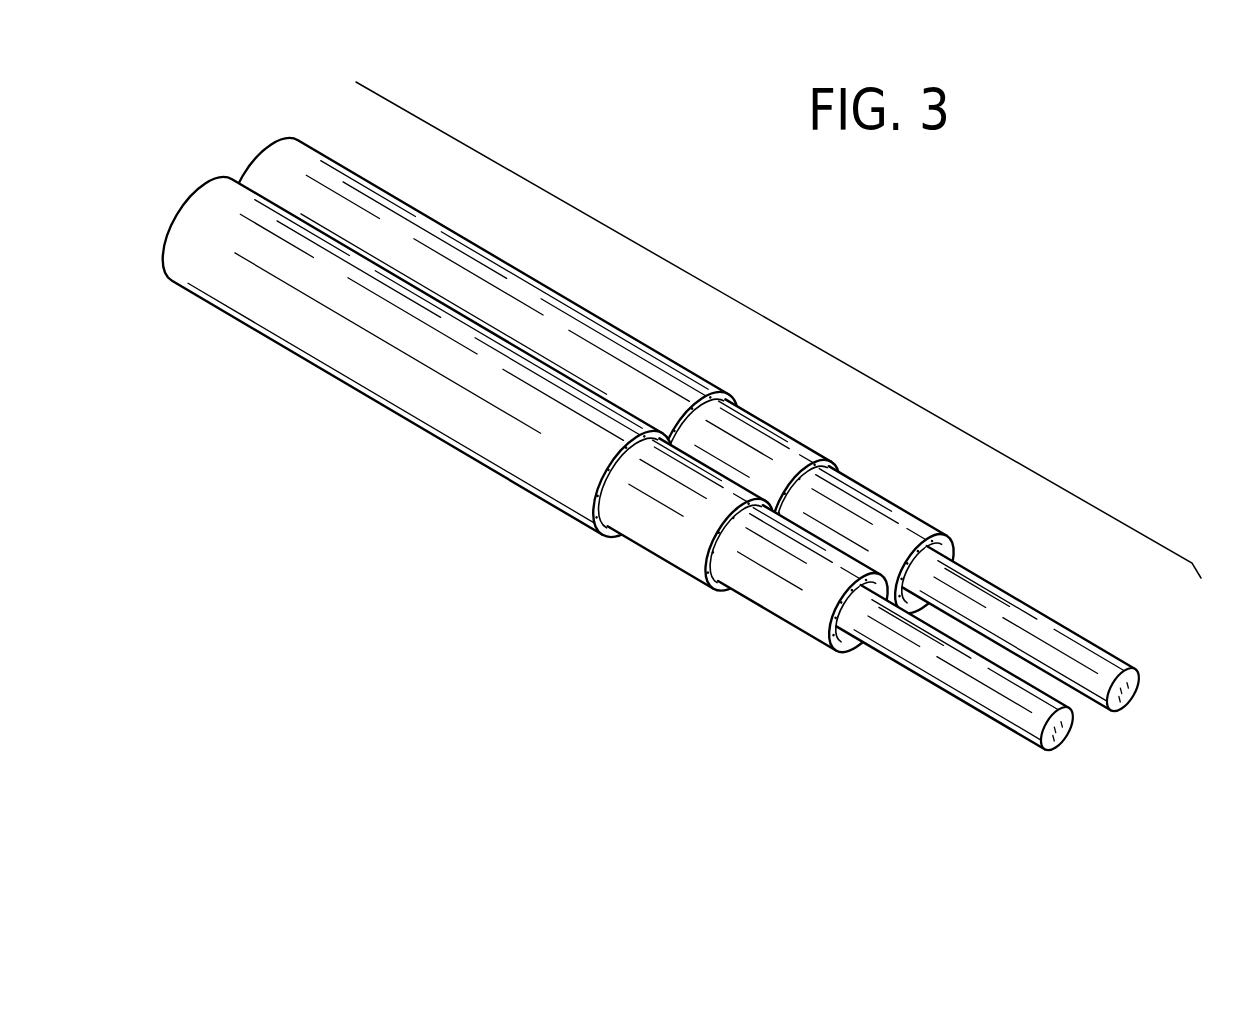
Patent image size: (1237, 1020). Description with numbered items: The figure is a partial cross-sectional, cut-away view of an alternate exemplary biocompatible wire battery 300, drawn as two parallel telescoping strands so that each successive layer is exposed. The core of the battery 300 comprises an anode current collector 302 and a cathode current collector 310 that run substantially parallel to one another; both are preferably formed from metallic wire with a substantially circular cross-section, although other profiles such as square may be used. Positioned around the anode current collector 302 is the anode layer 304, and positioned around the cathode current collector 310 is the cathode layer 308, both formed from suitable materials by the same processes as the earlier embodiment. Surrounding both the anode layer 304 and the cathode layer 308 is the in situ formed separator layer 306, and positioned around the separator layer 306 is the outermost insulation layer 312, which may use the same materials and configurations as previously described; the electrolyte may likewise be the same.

The biocompatible wire battery 300 is at (674, 418).
The anode current collector 302 is at (963, 682).
The anode layer 304 is at (779, 580).
The in situ formed separator layer 306 is at (657, 527).
The cathode layer 308 is at (866, 514).
The cathode current collector 310 is at (977, 605).
The insulation layer 312 is at (457, 418).